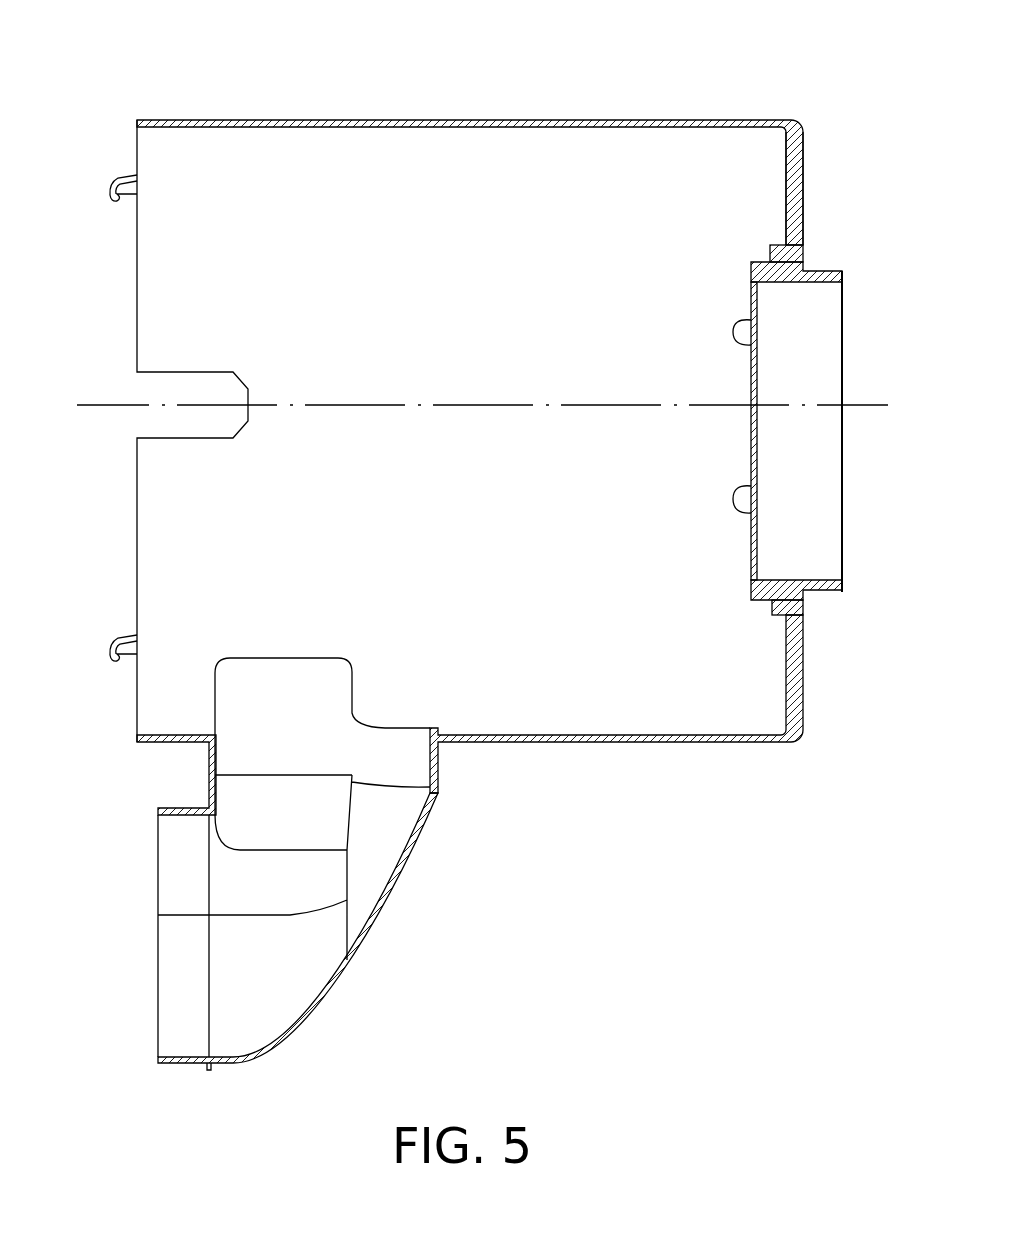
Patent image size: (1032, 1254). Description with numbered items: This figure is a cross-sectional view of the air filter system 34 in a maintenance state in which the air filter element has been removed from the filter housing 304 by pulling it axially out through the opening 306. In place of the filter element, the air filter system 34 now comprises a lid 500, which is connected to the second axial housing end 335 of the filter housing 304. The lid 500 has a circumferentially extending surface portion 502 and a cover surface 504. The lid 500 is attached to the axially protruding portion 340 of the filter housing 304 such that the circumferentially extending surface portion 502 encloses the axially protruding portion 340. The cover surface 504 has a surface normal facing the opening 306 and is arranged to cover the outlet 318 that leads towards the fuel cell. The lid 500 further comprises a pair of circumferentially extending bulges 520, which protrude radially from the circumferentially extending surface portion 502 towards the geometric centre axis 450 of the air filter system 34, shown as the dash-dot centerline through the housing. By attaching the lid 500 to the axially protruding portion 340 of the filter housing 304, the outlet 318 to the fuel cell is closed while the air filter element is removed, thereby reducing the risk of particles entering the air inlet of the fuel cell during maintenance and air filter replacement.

The air filter system 34 is at (510, 74).
The filter housing 304 is at (683, 120).
The opening 306 is at (137, 273).
The second axial housing end 335 is at (803, 176).
The circumferentially extending surface portion 502 is at (800, 268).
The axially protruding portion 340 is at (787, 284).
The lid 500 is at (752, 346).
The geometric centre axis 450 is at (861, 404).
The outlet 318 is at (805, 472).
The cover surface 504 is at (752, 514).
The circumferentially extending bulges 520 is at (771, 579).